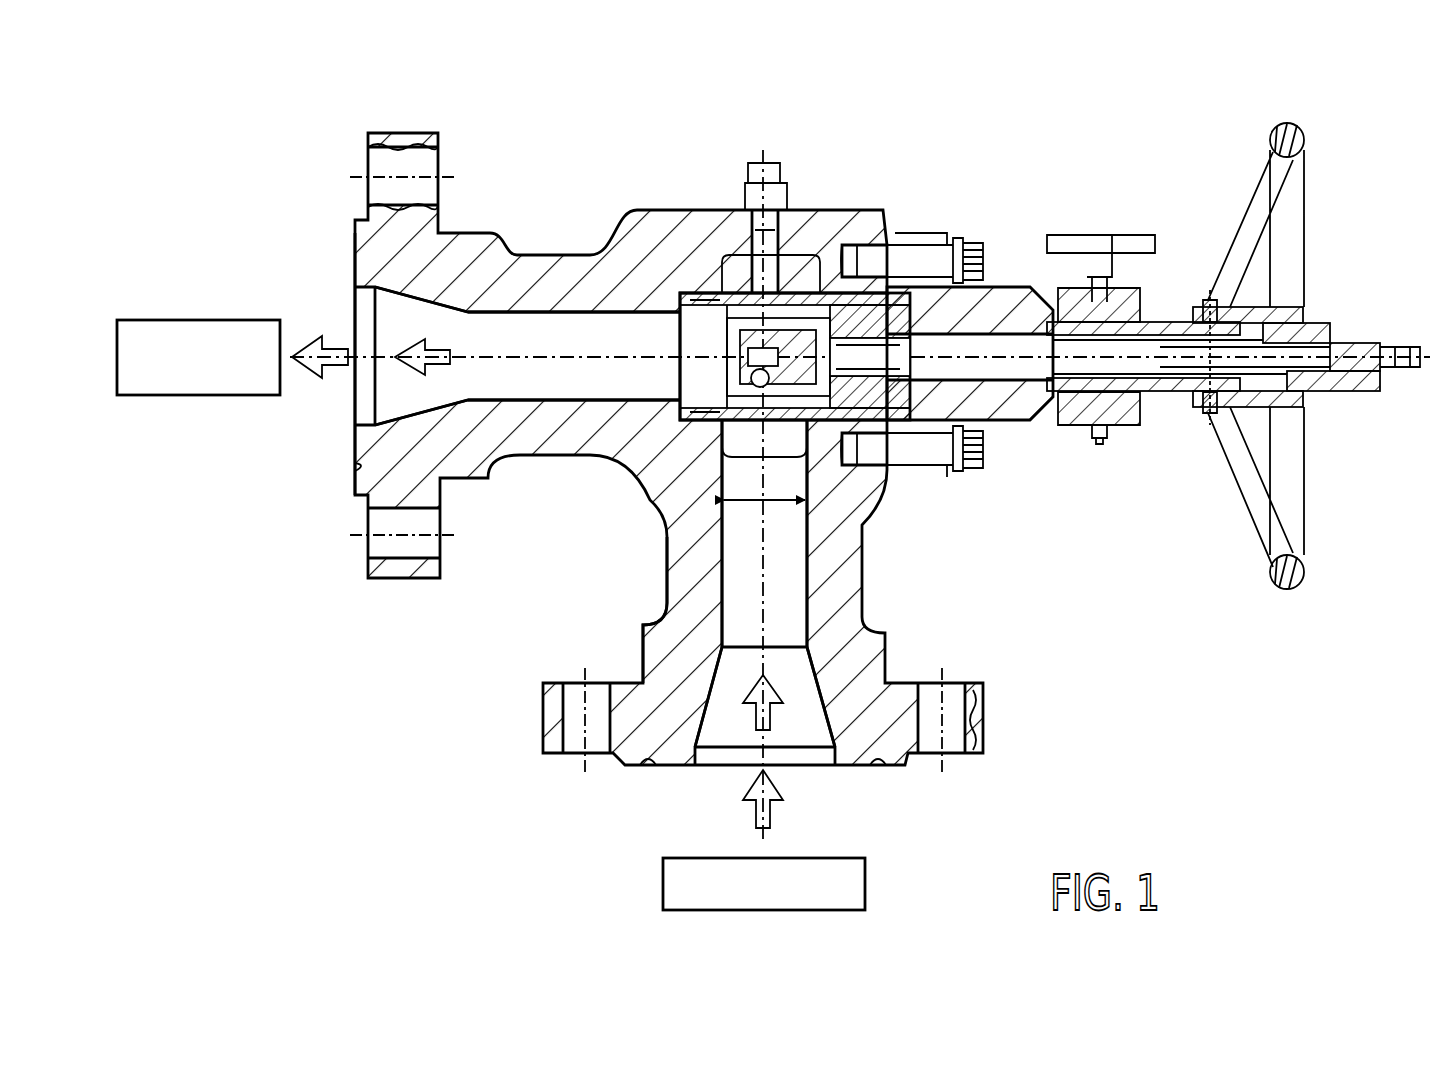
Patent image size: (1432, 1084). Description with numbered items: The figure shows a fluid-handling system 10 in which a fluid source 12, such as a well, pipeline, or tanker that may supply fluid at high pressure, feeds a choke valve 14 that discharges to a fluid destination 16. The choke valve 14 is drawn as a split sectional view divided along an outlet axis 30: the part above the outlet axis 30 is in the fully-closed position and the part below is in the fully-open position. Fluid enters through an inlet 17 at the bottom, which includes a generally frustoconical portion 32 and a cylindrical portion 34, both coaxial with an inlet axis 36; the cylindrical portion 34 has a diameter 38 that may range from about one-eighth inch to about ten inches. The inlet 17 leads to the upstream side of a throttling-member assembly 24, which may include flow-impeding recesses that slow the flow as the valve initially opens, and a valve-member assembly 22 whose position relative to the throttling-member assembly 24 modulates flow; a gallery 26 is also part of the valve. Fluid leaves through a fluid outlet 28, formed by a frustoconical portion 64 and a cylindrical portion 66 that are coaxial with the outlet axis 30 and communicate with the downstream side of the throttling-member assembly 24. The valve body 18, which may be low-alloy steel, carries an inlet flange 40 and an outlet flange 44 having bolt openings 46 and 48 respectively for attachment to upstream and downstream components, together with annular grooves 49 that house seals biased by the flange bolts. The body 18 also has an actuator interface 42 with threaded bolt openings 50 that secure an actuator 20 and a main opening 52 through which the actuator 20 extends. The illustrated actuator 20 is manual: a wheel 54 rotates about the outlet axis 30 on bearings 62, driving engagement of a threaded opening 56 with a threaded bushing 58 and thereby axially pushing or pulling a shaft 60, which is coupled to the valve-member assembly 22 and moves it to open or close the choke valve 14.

The fluid-handling system 10 is at (1100, 118).
The fluid source 12 is at (865, 880).
The choke valve 14 is at (682, 160).
The fluid destination 16 is at (200, 320).
The inlet 17 is at (799, 722).
The valve body 18 is at (860, 610).
The actuator 20 is at (1310, 178).
The valve-member assembly 22 is at (840, 287).
The throttling-member assembly 24 is at (740, 300).
The gallery 26 is at (785, 266).
The fluid outlet 28 is at (355, 322).
The outlet axis 30 is at (548, 362).
The frustoconical portion 32 is at (822, 690).
The cylindrical portion 34 is at (735, 598).
The inlet axis 36 is at (763, 520).
The diameter 38 is at (752, 505).
The inlet flange 40 is at (985, 718).
The actuator interface 42 is at (895, 482).
The outlet flange 44 is at (400, 583).
The bolt openings 46 is at (575, 770).
The bolt openings 48 is at (438, 185).
The annular grooves 49 is at (362, 468).
The threaded bolt openings 50 is at (935, 248).
The main opening 52 is at (912, 234).
The wheel 54 is at (1295, 585).
The threaded opening 56 is at (1278, 305).
The threaded bushing 58 is at (1308, 322).
The shaft 60 is at (1365, 348).
The bearings 62 is at (1208, 298).
The frustoconical portion 64 is at (452, 323).
The cylindrical portion 66 is at (585, 328).